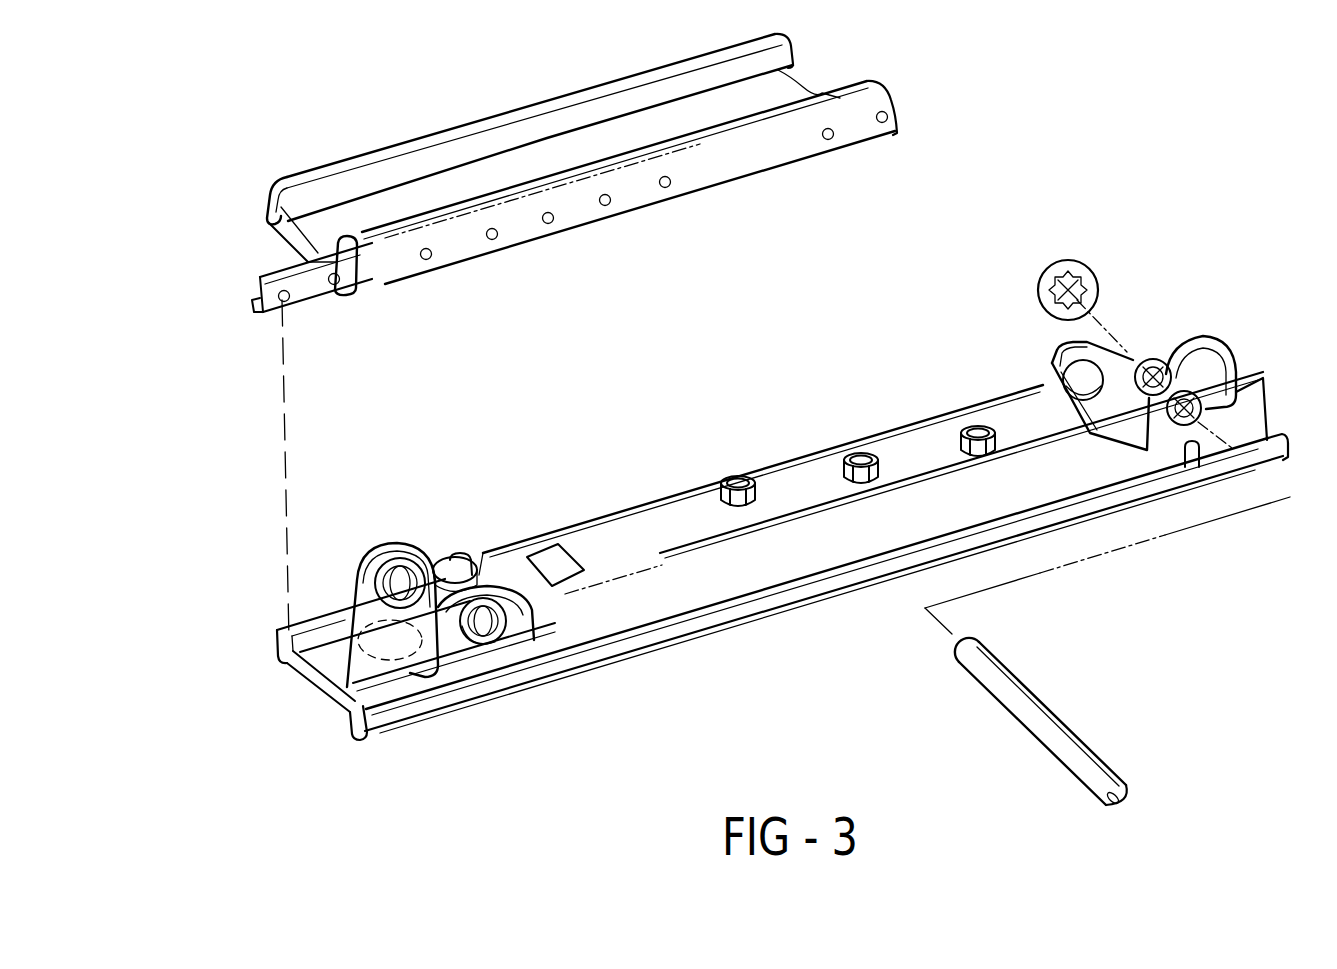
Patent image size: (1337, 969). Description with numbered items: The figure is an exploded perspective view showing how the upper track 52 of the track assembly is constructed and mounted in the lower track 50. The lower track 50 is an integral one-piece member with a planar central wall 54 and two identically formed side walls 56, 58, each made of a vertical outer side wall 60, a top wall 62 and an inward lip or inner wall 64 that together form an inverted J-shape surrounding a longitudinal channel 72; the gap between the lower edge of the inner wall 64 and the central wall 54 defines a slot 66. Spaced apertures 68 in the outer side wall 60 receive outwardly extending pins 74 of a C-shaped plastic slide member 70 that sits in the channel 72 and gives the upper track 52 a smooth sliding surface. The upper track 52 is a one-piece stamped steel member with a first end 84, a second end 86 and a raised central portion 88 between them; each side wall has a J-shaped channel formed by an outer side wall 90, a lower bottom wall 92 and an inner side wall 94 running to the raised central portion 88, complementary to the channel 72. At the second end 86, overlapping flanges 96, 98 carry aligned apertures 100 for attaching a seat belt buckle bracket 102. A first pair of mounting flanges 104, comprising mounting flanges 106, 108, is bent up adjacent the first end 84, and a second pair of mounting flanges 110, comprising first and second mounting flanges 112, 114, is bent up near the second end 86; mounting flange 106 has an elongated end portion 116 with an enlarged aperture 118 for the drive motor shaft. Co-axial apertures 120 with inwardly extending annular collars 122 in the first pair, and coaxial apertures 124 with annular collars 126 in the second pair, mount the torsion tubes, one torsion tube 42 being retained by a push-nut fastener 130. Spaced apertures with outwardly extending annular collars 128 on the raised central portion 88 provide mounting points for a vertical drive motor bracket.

The torsion tube 42 is at (995, 700).
The lower track 50 is at (617, 37).
The upper track 52 is at (643, 440).
The central wall 54 is at (275, 248).
The side wall 56 is at (270, 181).
The side wall 58 is at (514, 253).
The outer side wall 60 is at (280, 193).
The top wall 62 is at (524, 100).
The inner wall 64 is at (331, 250).
The slot 66 is at (282, 213).
The apertures 68 is at (830, 139).
The slide member 70 is at (247, 315).
The channel 72 is at (290, 222).
The pins 74 is at (889, 117).
The first end 84 is at (1300, 367).
The second end 86 is at (318, 700).
The raised central portion 88 is at (660, 513).
The outer side wall 90 is at (447, 700).
The lower bottom wall 92 is at (360, 727).
The inner side wall 94 is at (343, 713).
The overlapping flange 96 is at (317, 665).
The overlapping flange 98 is at (337, 690).
The aligned apertures 100 is at (340, 650).
The seat belt buckle bracket 102 is at (350, 569).
The first pair of mounting flanges 104 is at (1119, 328).
The mounting flange 106 is at (1147, 348).
The mounting flange 108 is at (1277, 458).
The second pair of mounting flanges 110 is at (435, 528).
The first mounting flange 112 is at (480, 565).
The second mounting flange 114 is at (510, 613).
The elongated end portion 116 is at (1057, 363).
The enlarged aperture 118 is at (1072, 370).
The aligned apertures 120 is at (1205, 337).
The annular collar 122 is at (1153, 352).
The coaxial apertures 124 is at (463, 553).
The annular collars 126 is at (437, 560).
The annular collar 128 is at (713, 477).
The fastener 130 is at (1047, 267).